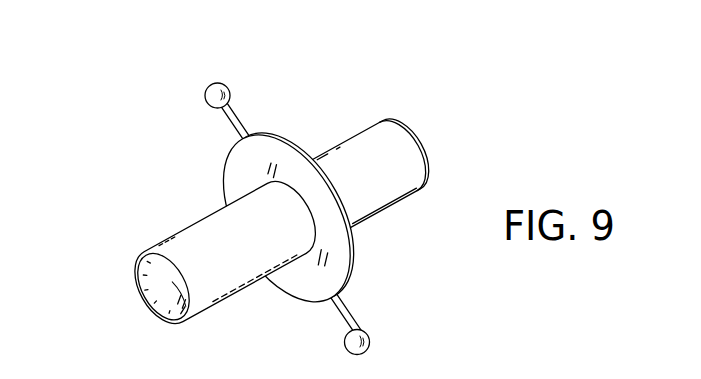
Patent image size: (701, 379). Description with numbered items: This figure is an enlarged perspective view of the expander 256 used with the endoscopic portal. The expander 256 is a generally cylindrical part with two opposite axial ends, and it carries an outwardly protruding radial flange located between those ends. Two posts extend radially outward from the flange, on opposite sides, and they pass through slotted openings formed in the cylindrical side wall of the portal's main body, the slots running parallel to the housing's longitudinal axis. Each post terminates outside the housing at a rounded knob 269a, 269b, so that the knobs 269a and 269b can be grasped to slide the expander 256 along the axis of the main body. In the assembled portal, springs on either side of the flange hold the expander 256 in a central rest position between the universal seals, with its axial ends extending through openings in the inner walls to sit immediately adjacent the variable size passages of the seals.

The expander 256 is at (359, 116).
The knob 269a is at (219, 84).
The knob 269b is at (344, 346).